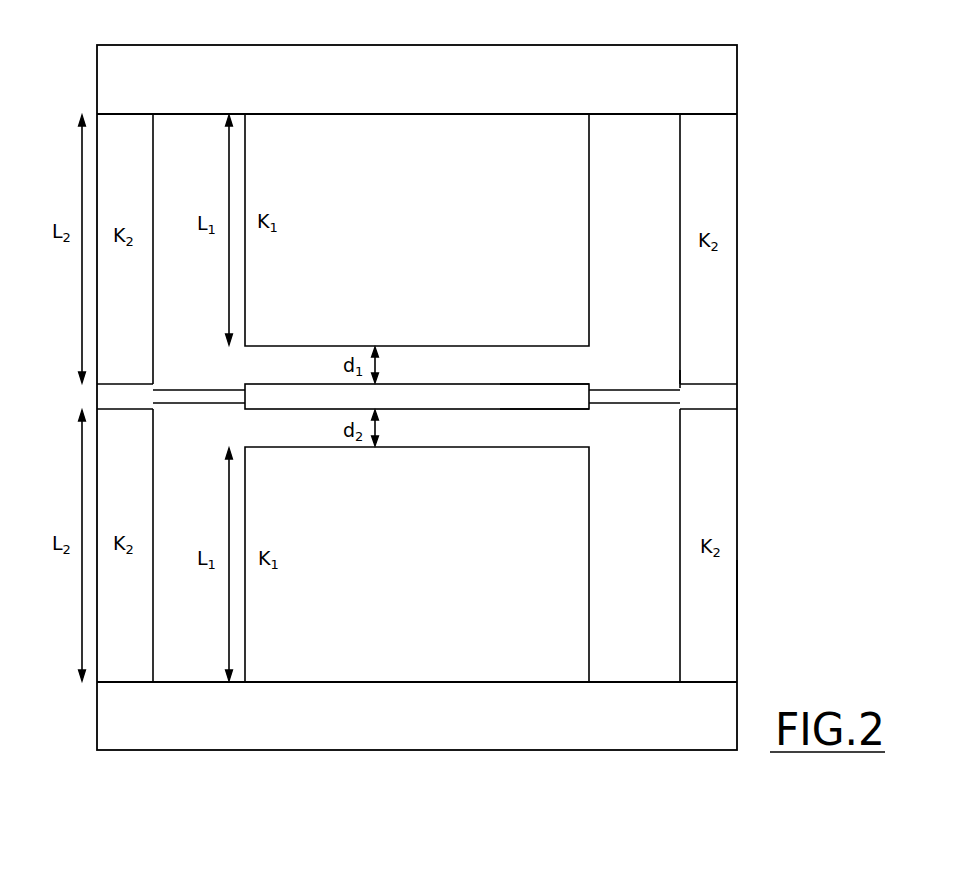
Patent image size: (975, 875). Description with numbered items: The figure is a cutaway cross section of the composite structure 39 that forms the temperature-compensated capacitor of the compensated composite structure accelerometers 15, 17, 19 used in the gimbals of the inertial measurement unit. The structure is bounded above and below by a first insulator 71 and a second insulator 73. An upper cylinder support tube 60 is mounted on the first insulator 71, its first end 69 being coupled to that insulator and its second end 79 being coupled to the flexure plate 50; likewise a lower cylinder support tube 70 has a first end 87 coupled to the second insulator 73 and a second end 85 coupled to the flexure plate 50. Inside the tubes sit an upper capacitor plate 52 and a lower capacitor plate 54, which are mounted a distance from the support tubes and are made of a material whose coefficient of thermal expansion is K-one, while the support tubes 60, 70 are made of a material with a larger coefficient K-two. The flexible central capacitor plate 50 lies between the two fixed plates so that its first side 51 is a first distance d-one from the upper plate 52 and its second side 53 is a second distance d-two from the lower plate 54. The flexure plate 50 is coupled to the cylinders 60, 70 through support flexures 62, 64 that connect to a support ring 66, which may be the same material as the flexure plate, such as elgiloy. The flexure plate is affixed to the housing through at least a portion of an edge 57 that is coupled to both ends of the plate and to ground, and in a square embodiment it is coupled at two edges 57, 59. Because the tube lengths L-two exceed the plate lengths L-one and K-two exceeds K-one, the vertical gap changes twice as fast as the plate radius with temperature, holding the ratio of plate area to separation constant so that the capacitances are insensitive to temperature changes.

The composite structure 39 is at (781, 99).
The first insulator 71 is at (167, 45).
The second insulator 73 is at (98, 727).
The first end of first support tube 69 is at (125, 112).
The edge of flexure plate 59 is at (154, 356).
The second end of first support tube 79 is at (107, 383).
The second end of second support tube 85 is at (107, 412).
The first end of second support tube 87 is at (111, 680).
The upper cylinder support tube 60 is at (737, 291).
The lower cylinder support tube 70 is at (737, 508).
The support ring 66 is at (737, 398).
The edge of flexure plate 57 is at (680, 387).
The upper capacitor plate 52 is at (590, 236).
The lower capacitor plate 54 is at (589, 509).
The flexure plate 50 is at (260, 383).
The first side of flexure plate 51 is at (572, 383).
The second side of flexure plate 53 is at (562, 412).
The support flexure 64 is at (170, 390).
The support flexure 62 is at (643, 389).
The compensated composite structure accelerometer 15 is at (792, 598).
The compensated composite structure accelerometer 17 is at (792, 598).
The compensated composite structure accelerometer 19 is at (787, 560).